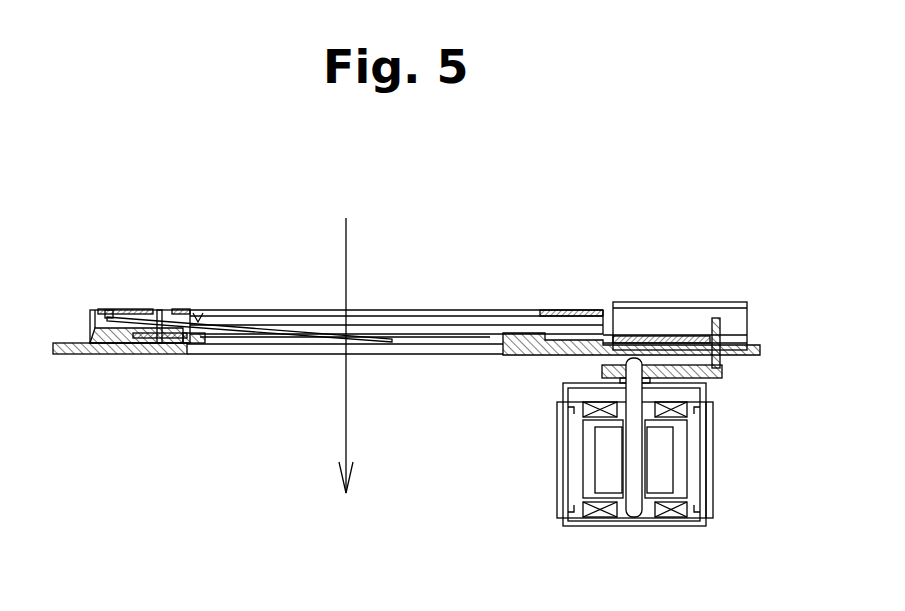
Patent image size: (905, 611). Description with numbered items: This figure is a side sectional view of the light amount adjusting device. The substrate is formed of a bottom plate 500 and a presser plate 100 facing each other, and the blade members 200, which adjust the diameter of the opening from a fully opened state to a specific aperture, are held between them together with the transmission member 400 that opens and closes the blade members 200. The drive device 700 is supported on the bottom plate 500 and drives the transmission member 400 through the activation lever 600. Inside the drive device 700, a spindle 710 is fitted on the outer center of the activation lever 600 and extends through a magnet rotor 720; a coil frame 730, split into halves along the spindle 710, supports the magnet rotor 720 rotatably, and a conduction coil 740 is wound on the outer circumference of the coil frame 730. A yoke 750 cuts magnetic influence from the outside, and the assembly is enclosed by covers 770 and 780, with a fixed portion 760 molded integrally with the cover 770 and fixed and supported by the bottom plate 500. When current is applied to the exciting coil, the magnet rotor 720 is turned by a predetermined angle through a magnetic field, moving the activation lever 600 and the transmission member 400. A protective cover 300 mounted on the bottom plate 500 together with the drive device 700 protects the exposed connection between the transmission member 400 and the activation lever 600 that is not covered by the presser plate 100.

The presser plate 100 is at (120, 311).
The blade members 200 is at (235, 311).
The protective cover 300 is at (683, 303).
The transmission member 400 is at (164, 346).
The bottom plate 500 is at (100, 350).
The activation lever 600 is at (720, 373).
The drive device 700 is at (717, 464).
The spindle 710 is at (633, 467).
The magnet rotor 720 is at (605, 458).
The coil frame 730 is at (575, 438).
The conduction coil 740 is at (585, 520).
The yoke 750 is at (713, 497).
The fixed portion 760 is at (603, 367).
The cover 770 is at (568, 392).
The cover 780 is at (655, 522).